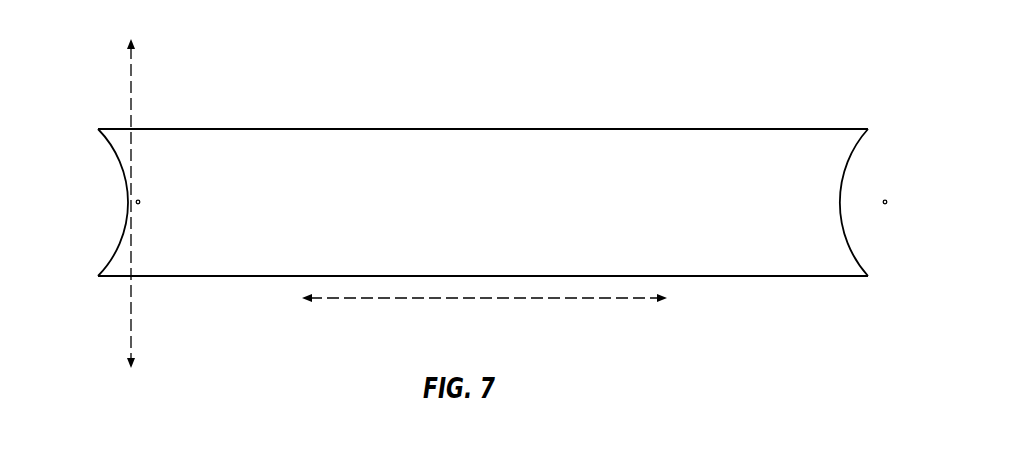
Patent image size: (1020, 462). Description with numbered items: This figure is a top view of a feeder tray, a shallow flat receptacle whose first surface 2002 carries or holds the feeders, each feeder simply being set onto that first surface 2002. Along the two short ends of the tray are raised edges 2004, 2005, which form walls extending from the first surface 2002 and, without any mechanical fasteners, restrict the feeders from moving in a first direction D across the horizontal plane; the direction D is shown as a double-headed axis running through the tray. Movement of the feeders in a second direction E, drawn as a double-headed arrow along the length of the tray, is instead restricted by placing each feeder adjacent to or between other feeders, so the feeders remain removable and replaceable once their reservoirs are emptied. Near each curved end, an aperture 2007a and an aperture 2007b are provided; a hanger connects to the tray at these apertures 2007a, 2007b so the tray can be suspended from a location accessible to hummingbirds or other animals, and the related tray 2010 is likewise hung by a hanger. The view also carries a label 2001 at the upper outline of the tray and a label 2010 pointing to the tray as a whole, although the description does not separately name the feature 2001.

The outer surface of lens body 2001 is at (285, 128).
The first surface 2002 is at (510, 220).
The raised edge 2004 is at (108, 157).
The raised edge 2005 is at (110, 247).
The aperture 2007a is at (140, 201).
The aperture 2007b is at (883, 201).
The feeder tray 2010 is at (774, 80).
The first direction D is at (131, 80).
The second direction E is at (550, 300).